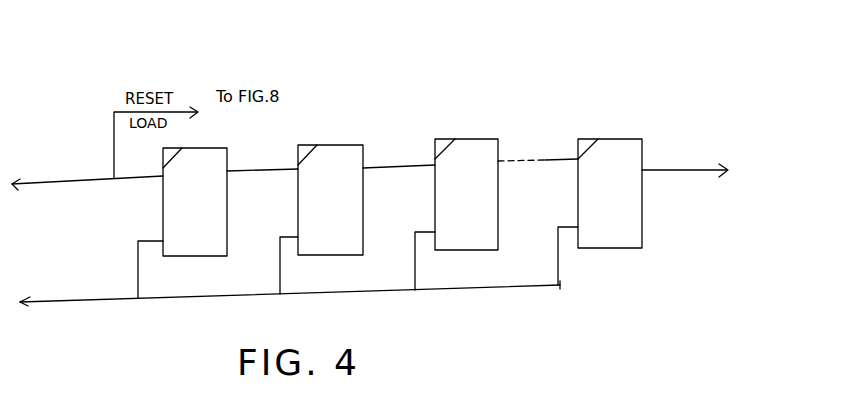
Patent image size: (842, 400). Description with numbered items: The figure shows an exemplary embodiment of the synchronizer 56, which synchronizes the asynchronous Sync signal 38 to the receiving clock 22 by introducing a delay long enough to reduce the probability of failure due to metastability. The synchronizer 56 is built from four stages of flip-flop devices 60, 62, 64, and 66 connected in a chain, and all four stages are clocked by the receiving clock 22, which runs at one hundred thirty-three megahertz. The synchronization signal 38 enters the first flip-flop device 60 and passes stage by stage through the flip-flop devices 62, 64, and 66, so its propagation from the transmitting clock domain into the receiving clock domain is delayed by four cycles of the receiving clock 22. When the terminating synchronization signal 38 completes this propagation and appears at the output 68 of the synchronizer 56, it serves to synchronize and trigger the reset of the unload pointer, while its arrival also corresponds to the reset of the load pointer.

The receiving clock 22 is at (299, 266).
The Sync signal 38 is at (52, 184).
The synchronizer 56 is at (398, 100).
The flip-flop device 60 is at (213, 148).
The flip-flop device 62 is at (330, 145).
The flip-flop device 64 is at (457, 137).
The flip-flop device 66 is at (588, 138).
The output of the synchronizer 68 is at (646, 165).